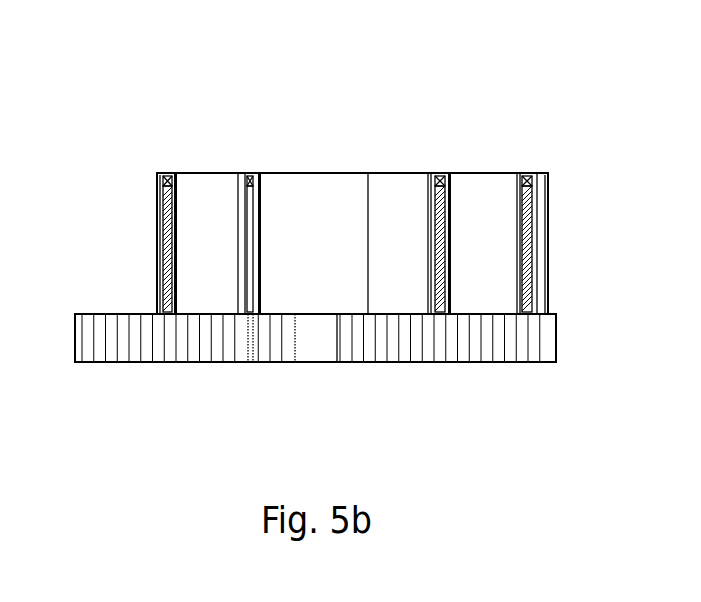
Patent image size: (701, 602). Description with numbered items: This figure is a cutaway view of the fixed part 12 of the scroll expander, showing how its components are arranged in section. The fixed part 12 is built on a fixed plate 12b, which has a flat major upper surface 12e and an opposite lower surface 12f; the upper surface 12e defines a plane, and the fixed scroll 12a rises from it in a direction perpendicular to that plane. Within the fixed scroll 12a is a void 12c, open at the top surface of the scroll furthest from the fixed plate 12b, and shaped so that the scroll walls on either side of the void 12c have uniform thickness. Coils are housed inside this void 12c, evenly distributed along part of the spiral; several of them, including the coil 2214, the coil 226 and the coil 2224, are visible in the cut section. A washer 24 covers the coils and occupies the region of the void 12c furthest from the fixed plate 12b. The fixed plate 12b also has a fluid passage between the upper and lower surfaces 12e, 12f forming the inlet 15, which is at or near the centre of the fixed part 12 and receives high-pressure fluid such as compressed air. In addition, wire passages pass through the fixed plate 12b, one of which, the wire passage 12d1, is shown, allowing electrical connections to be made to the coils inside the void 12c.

The fixed part 12 is at (88, 58).
The fixed scroll 12a is at (549, 295).
The fixed plate 12b is at (557, 336).
The void 12c is at (257, 210).
The wire passage 12d1 is at (250, 365).
The upper surface 12e is at (110, 312).
The lower surface 12f is at (110, 365).
The inlet 15 is at (313, 347).
The washer 24 is at (167, 174).
The coil 2214 is at (162, 210).
The coil 226 is at (447, 212).
The coil 2224 is at (534, 212).